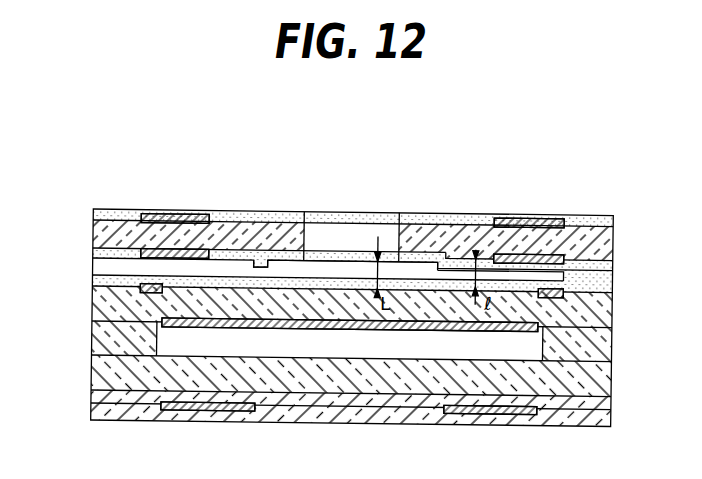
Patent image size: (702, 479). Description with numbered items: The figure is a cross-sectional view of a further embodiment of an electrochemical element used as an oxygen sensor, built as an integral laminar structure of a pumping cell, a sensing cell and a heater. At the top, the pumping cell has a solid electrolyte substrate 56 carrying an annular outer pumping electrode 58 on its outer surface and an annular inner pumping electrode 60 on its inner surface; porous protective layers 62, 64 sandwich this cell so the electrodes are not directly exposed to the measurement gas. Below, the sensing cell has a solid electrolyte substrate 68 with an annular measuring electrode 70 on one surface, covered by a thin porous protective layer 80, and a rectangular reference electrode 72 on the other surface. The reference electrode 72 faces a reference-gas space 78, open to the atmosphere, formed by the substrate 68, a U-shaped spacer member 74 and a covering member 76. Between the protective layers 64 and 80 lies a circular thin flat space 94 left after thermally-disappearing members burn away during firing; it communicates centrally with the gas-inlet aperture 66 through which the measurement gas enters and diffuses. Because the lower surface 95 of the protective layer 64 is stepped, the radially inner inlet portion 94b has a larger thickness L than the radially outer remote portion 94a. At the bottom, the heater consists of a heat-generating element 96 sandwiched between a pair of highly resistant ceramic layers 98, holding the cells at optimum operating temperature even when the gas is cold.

The substrate 56 is at (100, 233).
The outer pumping electrode 58 is at (510, 222).
The inner pumping electrode 60 is at (558, 248).
The porous protective layer 62 is at (117, 211).
The porous protective layer 64 is at (100, 264).
The gas-inlet aperture 66 is at (398, 232).
The substrate 68 is at (606, 313).
The measuring electrode 70 is at (138, 294).
The reference electrode 72 is at (284, 328).
The U-shaped spacer member 74 is at (606, 348).
The covering member 76 is at (606, 379).
The reference-gas space 78 is at (386, 355).
The porous protective layer 80 is at (100, 284).
The circular thin flat space 94 is at (305, 272).
The radially outer portion 94a is at (538, 270).
The radially inner inlet portion 94b is at (419, 263).
The lower surface 95 is at (288, 262).
The heat-generating element 96 is at (200, 412).
The ceramic layers 98 is at (100, 397).